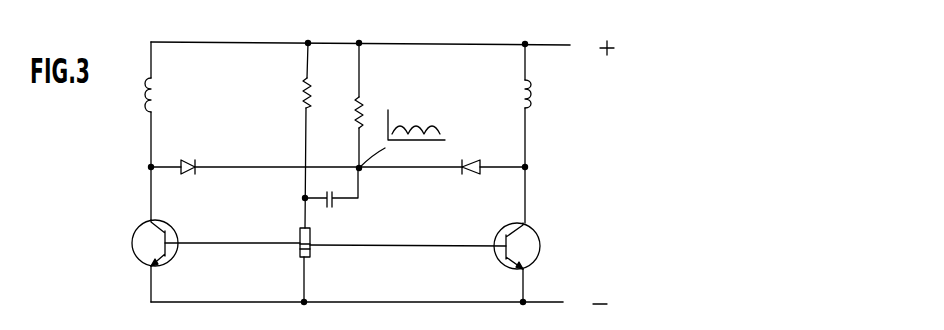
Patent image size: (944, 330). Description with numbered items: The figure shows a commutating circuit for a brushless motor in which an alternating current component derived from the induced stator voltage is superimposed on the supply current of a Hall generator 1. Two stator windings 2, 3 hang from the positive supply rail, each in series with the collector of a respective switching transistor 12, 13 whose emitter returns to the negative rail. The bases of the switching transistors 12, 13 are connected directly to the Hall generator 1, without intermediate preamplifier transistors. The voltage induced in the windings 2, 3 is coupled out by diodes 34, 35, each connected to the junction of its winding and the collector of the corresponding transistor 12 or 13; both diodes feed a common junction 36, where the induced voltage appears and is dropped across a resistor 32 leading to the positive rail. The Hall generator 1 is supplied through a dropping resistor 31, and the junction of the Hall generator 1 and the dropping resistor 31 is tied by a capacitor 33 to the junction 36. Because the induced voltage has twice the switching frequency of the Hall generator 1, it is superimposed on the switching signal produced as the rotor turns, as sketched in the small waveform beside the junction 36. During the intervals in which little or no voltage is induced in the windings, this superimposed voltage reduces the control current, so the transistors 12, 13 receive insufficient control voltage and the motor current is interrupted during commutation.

The Hall generator 1 is at (310, 251).
The winding 2 is at (148, 92).
The winding 3 is at (529, 91).
The switching transistor 12 is at (136, 246).
The switching transistor 13 is at (530, 245).
The dropping resistor 31 is at (304, 93).
The resistor 32 is at (364, 115).
The capacitor 33 is at (329, 207).
The diode 34 is at (197, 159).
The diode 35 is at (472, 160).
The junction 36 is at (358, 167).